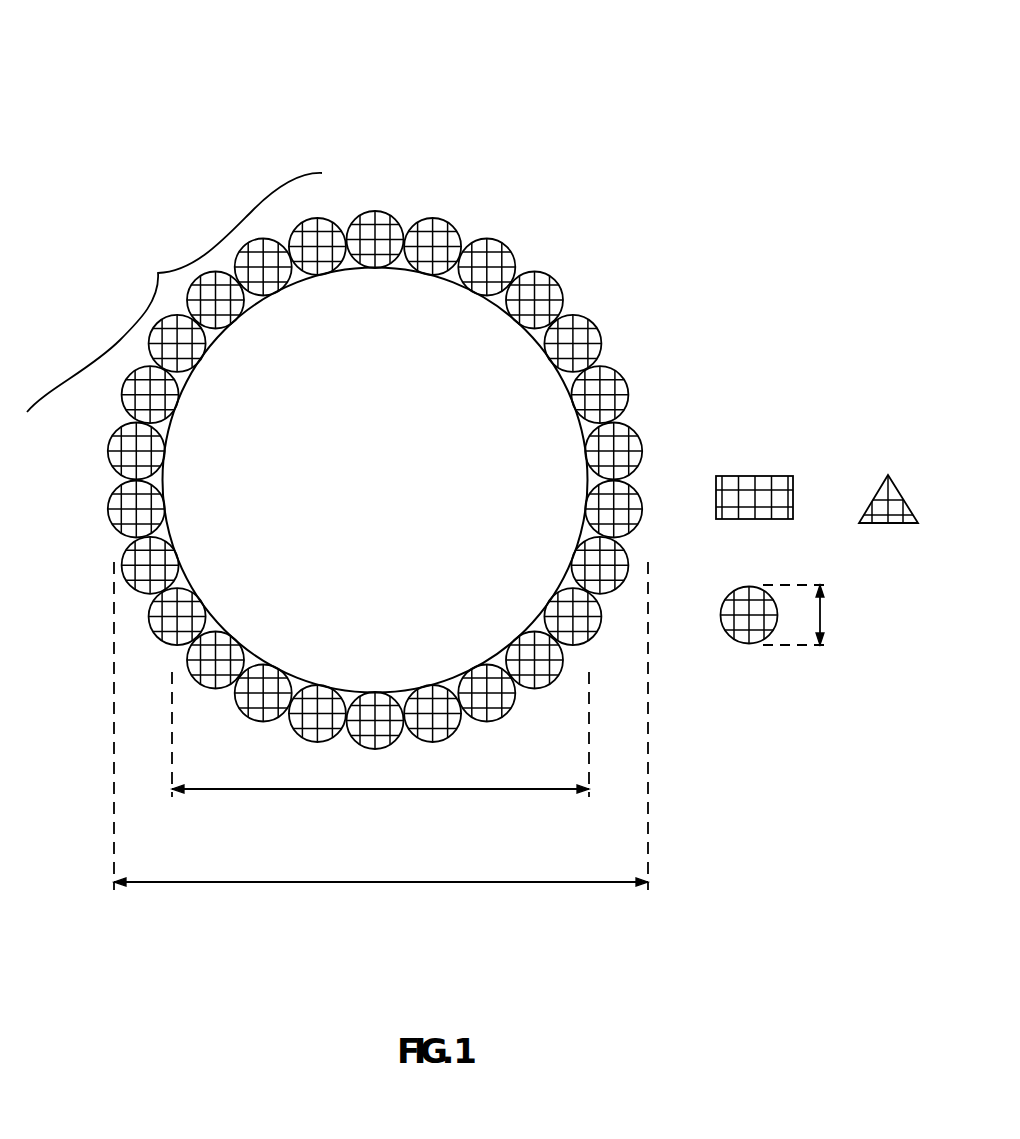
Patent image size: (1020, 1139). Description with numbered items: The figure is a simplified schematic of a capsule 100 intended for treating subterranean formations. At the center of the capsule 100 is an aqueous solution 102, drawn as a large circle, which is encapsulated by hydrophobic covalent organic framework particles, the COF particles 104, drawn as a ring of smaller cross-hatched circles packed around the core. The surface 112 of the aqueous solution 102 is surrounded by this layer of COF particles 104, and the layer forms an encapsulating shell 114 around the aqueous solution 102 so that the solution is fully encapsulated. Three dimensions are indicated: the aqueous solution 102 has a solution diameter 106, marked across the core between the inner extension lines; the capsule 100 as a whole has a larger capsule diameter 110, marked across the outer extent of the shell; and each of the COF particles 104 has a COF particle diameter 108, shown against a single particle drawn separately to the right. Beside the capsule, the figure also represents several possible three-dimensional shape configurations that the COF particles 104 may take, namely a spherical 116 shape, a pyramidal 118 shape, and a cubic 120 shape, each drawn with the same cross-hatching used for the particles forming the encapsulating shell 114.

The capsule 100 is at (203, 68).
The aqueous solution 102 is at (397, 493).
The COF particles 104 is at (545, 290).
The solution diameter 106 is at (380, 789).
The COF particle diameter 108 is at (822, 617).
The capsule diameter 110 is at (380, 882).
The surface 112 is at (401, 480).
The encapsulating shell 114 is at (174, 292).
The spherical shape configuration 116 is at (745, 645).
The pyramidal shape configuration 118 is at (890, 475).
The cubic shape configuration 120 is at (748, 475).